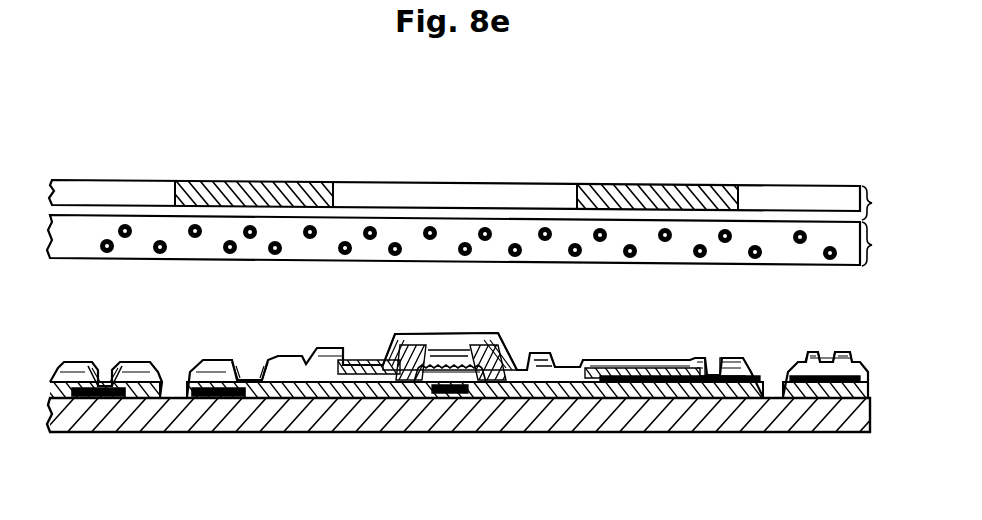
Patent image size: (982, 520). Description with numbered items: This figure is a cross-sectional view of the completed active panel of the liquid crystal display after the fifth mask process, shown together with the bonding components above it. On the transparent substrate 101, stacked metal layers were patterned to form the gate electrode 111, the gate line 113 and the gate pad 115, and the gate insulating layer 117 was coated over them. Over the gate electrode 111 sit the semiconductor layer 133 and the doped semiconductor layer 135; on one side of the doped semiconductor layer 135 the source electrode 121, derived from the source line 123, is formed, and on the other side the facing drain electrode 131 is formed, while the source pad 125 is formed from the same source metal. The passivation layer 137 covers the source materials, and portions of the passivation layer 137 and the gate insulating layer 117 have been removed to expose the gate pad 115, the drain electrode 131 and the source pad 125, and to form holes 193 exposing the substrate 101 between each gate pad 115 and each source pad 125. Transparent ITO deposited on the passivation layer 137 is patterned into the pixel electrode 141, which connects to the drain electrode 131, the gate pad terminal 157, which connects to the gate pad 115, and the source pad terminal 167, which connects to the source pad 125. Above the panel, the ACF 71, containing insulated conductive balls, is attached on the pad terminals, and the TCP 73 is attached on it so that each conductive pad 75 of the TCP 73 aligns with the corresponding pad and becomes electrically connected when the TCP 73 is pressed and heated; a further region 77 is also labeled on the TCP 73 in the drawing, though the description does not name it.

The ACF 71 is at (478, 240).
The TCP 73 is at (479, 200).
The conductive pad 75 is at (655, 189).
The color filter 77 is at (362, 188).
The transparent substrate 101 is at (828, 418).
The gate electrode 111 is at (450, 396).
The gate line 113 is at (343, 398).
The gate pad 115 is at (98, 398).
The gate insulating layer 117 is at (634, 382).
The source electrode 121 is at (393, 354).
The source line 123 is at (310, 376).
The source pad 125 is at (800, 374).
The drain electrode 131 is at (512, 356).
The semiconductor layer 133 is at (520, 400).
The doped semiconductor layer 135 is at (452, 348).
The passivation layer 137 is at (476, 340).
The pixel electrode 141 is at (548, 362).
The gate pad terminal 157 is at (100, 372).
The source pad terminal 167 is at (701, 372).
The holes 193 is at (176, 390).